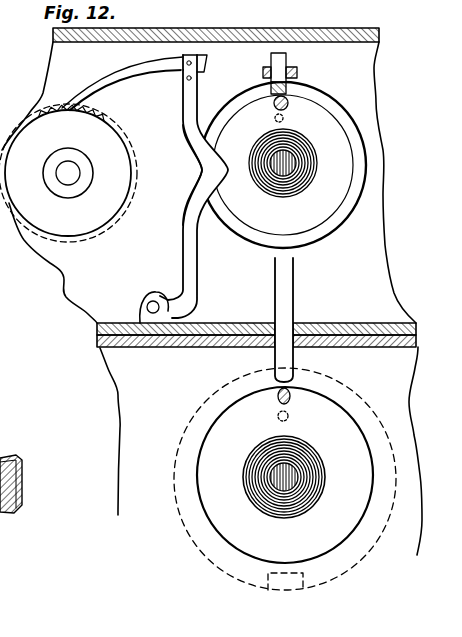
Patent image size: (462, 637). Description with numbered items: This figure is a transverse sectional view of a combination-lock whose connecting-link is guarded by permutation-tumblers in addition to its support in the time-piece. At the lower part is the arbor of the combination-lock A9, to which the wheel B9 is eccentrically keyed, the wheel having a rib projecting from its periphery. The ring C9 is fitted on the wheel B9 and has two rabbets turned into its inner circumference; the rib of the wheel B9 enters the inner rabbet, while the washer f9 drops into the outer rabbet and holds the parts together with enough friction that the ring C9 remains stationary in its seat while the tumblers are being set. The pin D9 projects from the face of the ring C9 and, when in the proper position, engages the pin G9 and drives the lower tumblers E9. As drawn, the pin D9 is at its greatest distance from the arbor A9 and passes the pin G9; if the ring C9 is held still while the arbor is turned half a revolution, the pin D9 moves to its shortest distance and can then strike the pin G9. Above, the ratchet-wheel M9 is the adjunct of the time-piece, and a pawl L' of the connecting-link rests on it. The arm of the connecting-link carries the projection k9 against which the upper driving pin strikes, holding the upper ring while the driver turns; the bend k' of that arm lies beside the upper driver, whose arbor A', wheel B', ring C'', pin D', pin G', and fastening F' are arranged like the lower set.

The ratchet or adjunct of the time-piece M9 is at (68, 173).
The curved arm L' is at (122, 83).
The projection on arm K9 k9 is at (183, 259).
The bend of bracket k' is at (185, 175).
The fastening bolt F' is at (269, 75).
The pin D' is at (269, 107).
The small dashed pin G' is at (293, 124).
The inner ring B' is at (283, 165).
The outer casing ring C'' is at (283, 165).
The spring arbor A' is at (283, 163).
The washer f9 is at (276, 320).
The pin D9 is at (268, 410).
The pin G9 is at (272, 430).
The wheel B9 is at (240, 481).
The ring C9 is at (285, 475).
The lower tumblers E9 is at (246, 571).
The arbor of the combination-lock A9 is at (284, 477).